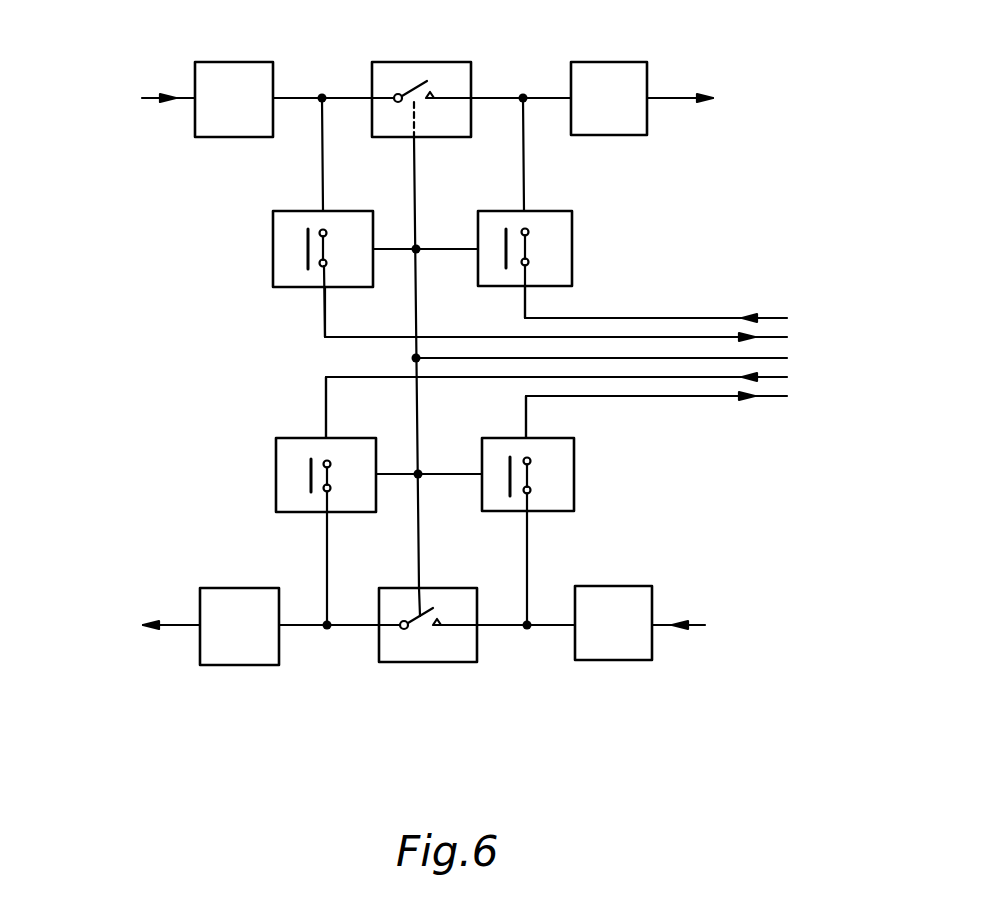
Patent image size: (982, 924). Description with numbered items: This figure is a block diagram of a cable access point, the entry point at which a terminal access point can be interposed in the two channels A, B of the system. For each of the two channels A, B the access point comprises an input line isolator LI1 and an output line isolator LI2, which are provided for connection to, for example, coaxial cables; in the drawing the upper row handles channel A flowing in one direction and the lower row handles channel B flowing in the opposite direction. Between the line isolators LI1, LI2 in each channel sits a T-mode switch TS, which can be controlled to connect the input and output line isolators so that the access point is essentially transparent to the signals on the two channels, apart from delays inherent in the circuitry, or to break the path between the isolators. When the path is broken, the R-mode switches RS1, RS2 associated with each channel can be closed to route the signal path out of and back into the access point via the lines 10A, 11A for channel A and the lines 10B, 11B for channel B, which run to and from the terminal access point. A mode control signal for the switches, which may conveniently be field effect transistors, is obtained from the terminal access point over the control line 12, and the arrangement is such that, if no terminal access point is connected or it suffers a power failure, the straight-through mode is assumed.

The input line isolator LI1 is at (217, 60).
The output line isolator LI2 is at (234, 686).
The T-mode switch TS is at (438, 60).
The R-mode switch RS1 is at (273, 228).
The R-mode switch RS2 is at (572, 211).
The line 11A is at (787, 318).
The line 10A is at (790, 336).
The control line 12 is at (795, 358).
The line 10B is at (795, 377).
The line 11B is at (793, 397).
The channel A is at (426, 79).
The channel B is at (426, 606).